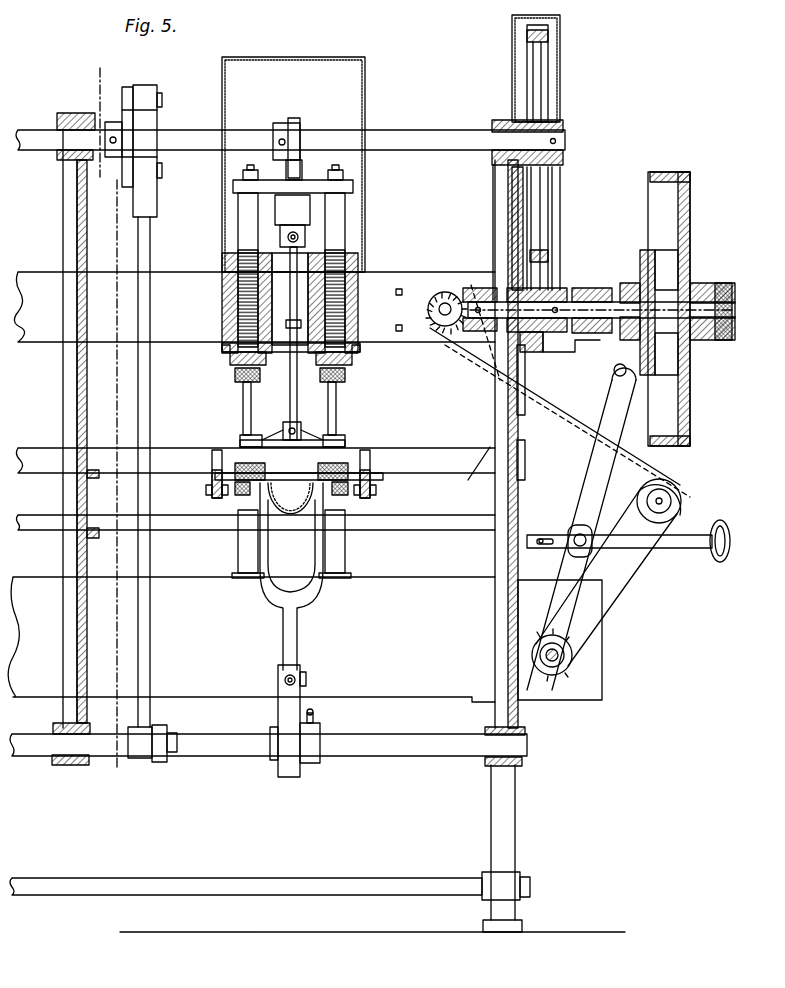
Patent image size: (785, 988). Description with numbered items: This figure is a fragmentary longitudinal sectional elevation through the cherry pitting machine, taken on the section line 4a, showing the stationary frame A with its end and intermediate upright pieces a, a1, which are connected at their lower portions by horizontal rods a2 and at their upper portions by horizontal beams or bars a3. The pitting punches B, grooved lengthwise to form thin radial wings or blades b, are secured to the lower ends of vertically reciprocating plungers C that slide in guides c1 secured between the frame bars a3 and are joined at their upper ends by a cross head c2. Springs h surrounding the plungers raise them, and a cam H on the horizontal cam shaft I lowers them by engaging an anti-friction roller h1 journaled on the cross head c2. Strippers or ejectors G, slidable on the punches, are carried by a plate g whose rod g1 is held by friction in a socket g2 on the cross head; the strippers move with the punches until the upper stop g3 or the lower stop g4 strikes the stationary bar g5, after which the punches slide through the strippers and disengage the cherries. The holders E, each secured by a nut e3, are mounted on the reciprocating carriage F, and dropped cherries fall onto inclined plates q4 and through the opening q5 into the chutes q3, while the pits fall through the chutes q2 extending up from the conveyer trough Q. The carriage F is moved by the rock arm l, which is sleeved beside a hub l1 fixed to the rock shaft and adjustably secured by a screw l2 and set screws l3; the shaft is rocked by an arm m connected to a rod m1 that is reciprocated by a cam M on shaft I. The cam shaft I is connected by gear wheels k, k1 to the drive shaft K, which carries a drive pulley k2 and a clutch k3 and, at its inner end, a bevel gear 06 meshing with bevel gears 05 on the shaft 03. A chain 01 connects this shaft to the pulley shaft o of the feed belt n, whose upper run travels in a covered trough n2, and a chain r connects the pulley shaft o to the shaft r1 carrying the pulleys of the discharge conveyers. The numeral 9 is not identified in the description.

The section line 4a is at (60, 76).
The conveyer trough Q is at (305, 639).
The cam shaft I is at (418, 137).
The horizontal rods a2 is at (227, 880).
The stationary frame A is at (527, 812).
The end upright piece a is at (507, 642).
The gear wheel k is at (538, 78).
The gear wheel k1 is at (553, 277).
The drive shaft K is at (593, 303).
The bevel gears 05 is at (438, 286).
The bevel gear 06 is at (470, 287).
The clutch k3 is at (642, 253).
The drive pulley k2 is at (687, 200).
The collar nut 9 is at (697, 340).
The shaft 03 is at (448, 300).
The chain 01 is at (577, 382).
The feed belt n is at (638, 473).
The covered trough n2 is at (489, 449).
The pulley shaft o is at (662, 502).
The chain r is at (630, 583).
The shaft r1 is at (557, 662).
The intermediate upright piece a1 is at (62, 386).
The cam M is at (130, 125).
The rod m1 is at (148, 376).
The arm m is at (165, 762).
The cam H is at (297, 127).
The anti-friction roller h1 is at (295, 170).
The cross head c2 is at (355, 190).
The plungers C is at (358, 383).
The socket g2 is at (304, 222).
The guides c1 is at (232, 278).
The springs h is at (240, 300).
The horizontal beams or bars a3 is at (173, 288).
The upper stop g3 is at (294, 322).
The bar g5 is at (255, 322).
The lower stop g4 is at (265, 358).
The wings or blades b is at (243, 408).
The pitting punches B is at (251, 398).
The rod g1 is at (290, 385).
The strippers or ejectors G is at (240, 440).
The plate or carrier g is at (298, 434).
The inclined plates q4 is at (212, 457).
The holders E is at (263, 475).
The carriage or slide F is at (395, 476).
The opening q5 is at (283, 481).
The nut e3 is at (357, 502).
The chutes q3 is at (285, 520).
The chutes q2 is at (238, 548).
The rock arm l is at (296, 632).
The set screws l3 is at (285, 678).
The screw l2 is at (305, 672).
The hub l1 is at (293, 697).